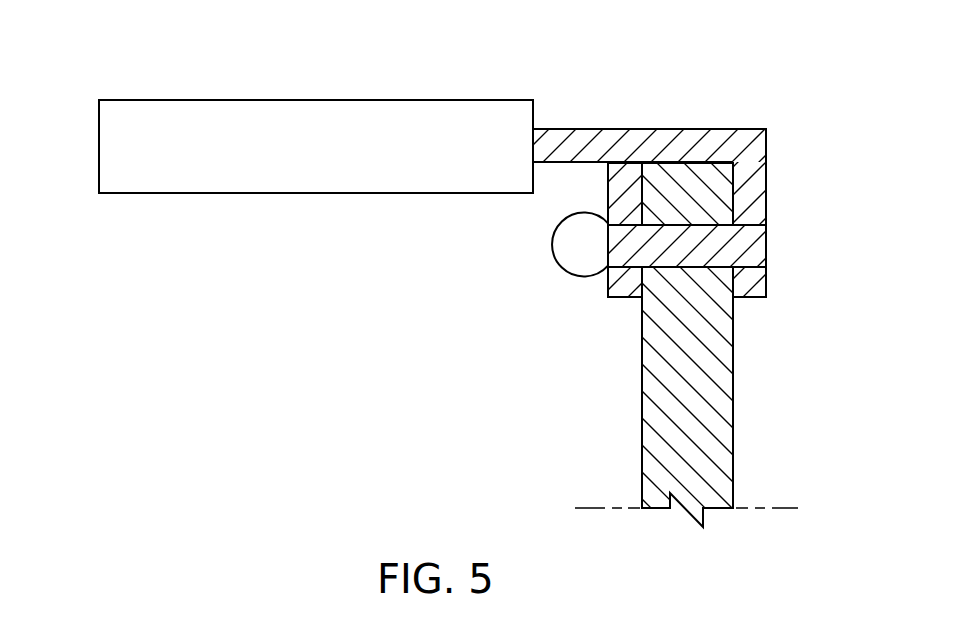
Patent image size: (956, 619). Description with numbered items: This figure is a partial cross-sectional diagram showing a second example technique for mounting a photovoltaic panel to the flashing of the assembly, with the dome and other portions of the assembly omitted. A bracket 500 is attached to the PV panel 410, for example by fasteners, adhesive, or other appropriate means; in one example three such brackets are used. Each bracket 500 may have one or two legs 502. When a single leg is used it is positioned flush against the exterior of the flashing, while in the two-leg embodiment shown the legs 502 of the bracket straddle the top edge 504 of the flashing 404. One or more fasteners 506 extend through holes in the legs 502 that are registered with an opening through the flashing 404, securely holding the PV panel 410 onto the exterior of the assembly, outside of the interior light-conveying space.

The bracket 500 is at (110, 61).
The PV panel 410 is at (313, 182).
The leg 502 is at (766, 213).
The top edge 504 is at (691, 185).
The fastener 506 is at (558, 248).
The flashing 404 is at (733, 392).